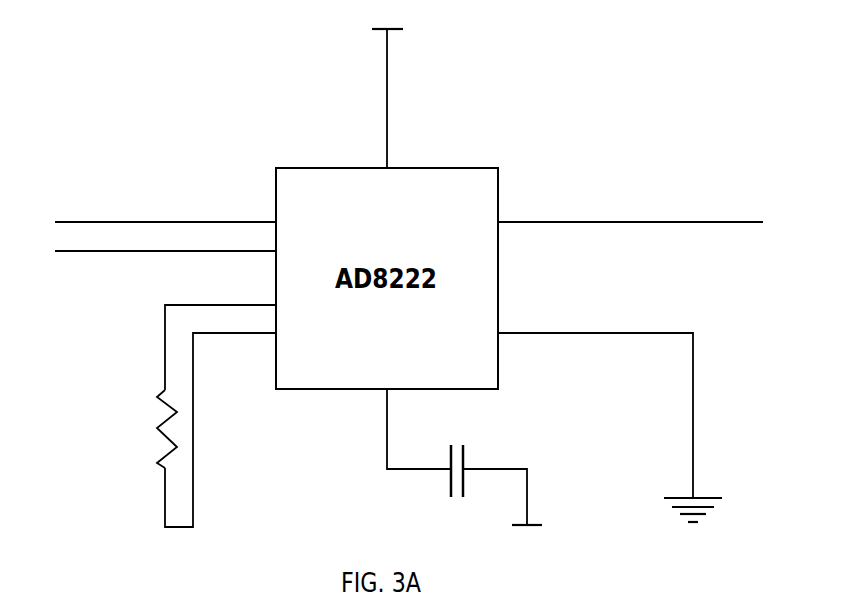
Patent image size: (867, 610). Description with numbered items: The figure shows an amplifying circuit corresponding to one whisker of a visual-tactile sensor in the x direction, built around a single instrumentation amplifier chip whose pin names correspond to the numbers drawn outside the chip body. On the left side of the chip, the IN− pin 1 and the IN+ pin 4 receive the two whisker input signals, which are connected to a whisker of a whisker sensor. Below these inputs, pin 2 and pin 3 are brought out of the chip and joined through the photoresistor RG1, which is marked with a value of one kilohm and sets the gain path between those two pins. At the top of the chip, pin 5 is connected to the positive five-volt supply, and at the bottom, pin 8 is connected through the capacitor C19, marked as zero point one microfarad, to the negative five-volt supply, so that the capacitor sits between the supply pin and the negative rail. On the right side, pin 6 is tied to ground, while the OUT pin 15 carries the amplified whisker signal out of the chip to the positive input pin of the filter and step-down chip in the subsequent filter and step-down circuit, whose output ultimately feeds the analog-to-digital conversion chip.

The IN− pin 1 is at (165, 212).
The AD8222 chip pin 2 is at (220, 337).
The AD8222 chip pin 3 is at (220, 420).
The IN+ pin 4 is at (165, 241).
The AD8222 chip pin 5 is at (385, 87).
The AD8222 chip pin 6 is at (610, 432).
The AD8222 chip pin 8 is at (407, 429).
The OUT pin 15 is at (630, 211).
The photoresistor RG1 is at (134, 429).
The capacitor C19 is at (491, 487).